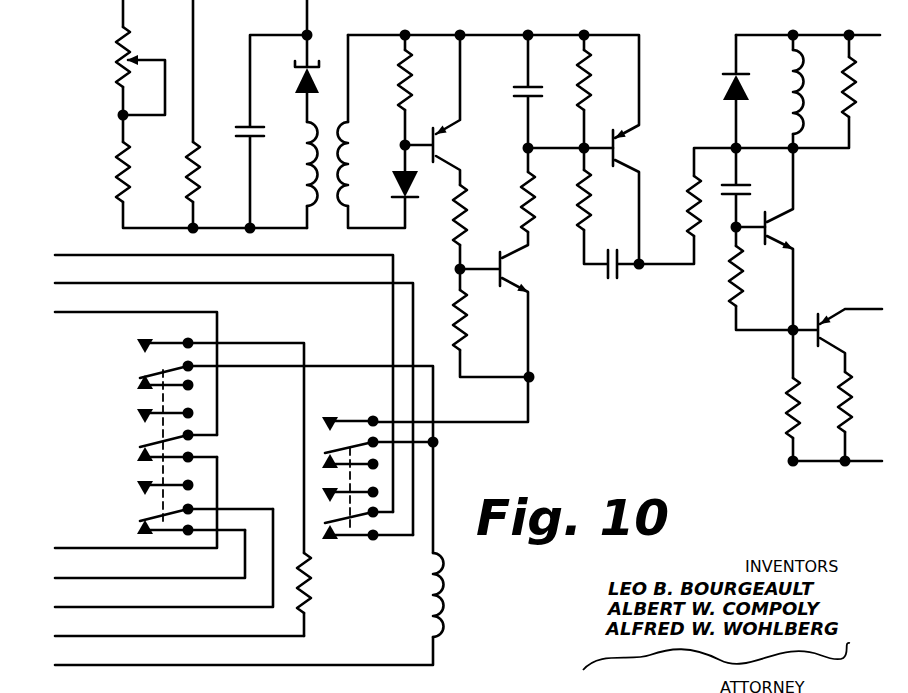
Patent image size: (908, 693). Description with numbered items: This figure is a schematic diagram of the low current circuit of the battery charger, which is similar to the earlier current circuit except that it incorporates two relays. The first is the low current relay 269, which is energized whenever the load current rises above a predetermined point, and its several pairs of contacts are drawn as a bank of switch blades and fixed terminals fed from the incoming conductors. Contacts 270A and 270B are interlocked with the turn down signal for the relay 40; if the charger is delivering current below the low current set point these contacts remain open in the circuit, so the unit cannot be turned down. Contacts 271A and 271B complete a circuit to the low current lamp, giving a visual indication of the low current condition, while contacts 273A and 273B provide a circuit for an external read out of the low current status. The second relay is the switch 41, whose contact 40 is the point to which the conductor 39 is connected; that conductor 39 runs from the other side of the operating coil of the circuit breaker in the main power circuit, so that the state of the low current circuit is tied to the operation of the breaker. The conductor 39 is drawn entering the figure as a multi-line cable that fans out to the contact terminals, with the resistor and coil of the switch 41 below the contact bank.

The conductor 39 is at (72, 283).
The low current relay 269 is at (234, 445).
The contact 270A is at (140, 349).
The contact 270B is at (140, 374).
The contact 271A is at (140, 443).
The contact 271B is at (140, 461).
The contact 273A is at (140, 514).
The contact 273B is at (140, 528).
The contact 40 is at (329, 538).
The switch 41 is at (404, 618).